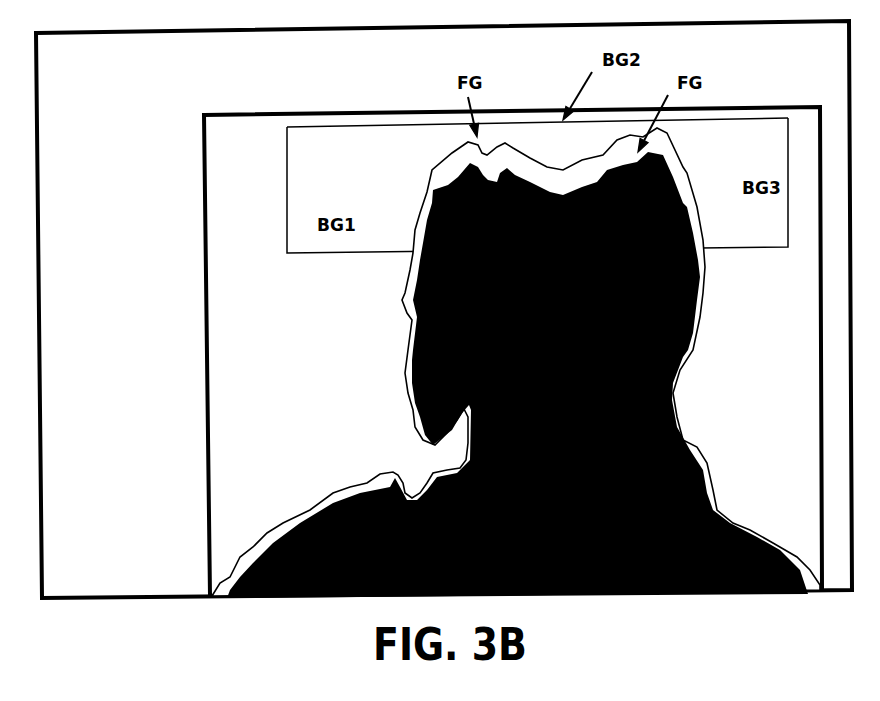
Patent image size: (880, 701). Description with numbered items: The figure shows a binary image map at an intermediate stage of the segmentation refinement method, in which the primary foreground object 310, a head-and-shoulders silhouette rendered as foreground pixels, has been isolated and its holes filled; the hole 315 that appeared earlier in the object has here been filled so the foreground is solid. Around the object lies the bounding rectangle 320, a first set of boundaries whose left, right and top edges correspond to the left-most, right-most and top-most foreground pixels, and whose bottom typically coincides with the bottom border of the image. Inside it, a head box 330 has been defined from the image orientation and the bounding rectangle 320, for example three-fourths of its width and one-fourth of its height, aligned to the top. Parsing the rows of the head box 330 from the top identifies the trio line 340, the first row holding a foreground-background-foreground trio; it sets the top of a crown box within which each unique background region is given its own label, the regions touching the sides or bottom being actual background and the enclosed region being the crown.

The foreground object 310 is at (378, 356).
The hole 315 is at (658, 334).
The bounding rectangle 320 is at (191, 198).
The head box 330 is at (330, 268).
The trio line 340 is at (396, 141).